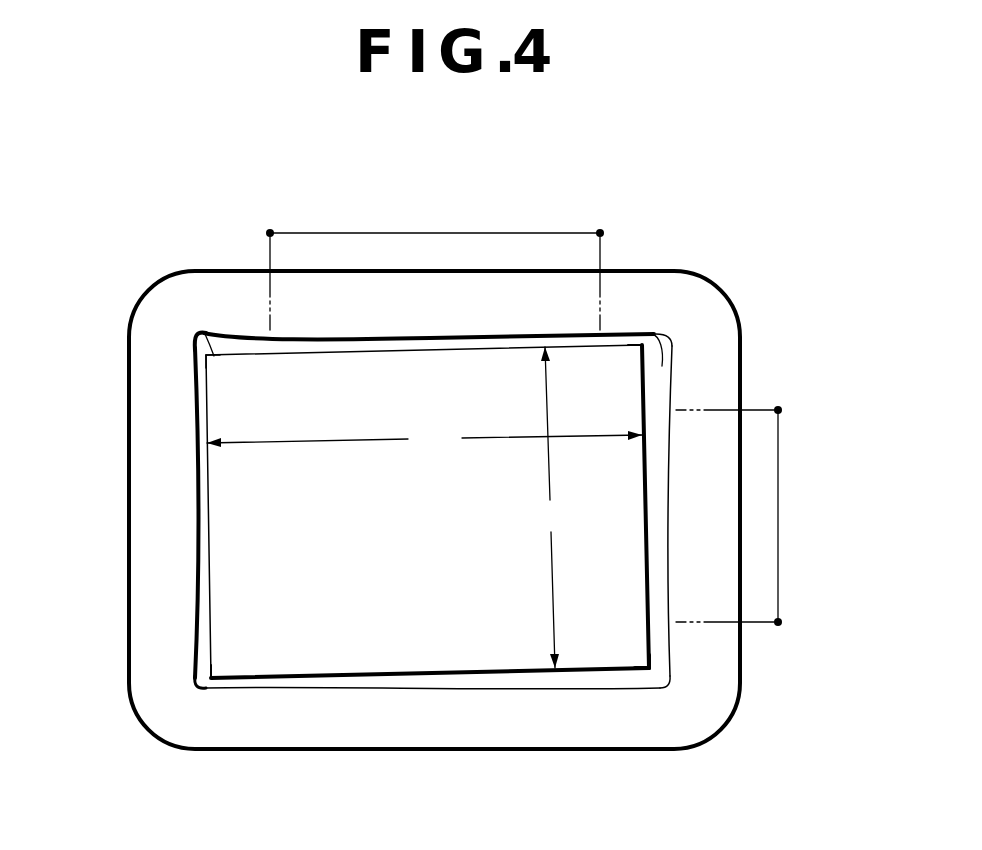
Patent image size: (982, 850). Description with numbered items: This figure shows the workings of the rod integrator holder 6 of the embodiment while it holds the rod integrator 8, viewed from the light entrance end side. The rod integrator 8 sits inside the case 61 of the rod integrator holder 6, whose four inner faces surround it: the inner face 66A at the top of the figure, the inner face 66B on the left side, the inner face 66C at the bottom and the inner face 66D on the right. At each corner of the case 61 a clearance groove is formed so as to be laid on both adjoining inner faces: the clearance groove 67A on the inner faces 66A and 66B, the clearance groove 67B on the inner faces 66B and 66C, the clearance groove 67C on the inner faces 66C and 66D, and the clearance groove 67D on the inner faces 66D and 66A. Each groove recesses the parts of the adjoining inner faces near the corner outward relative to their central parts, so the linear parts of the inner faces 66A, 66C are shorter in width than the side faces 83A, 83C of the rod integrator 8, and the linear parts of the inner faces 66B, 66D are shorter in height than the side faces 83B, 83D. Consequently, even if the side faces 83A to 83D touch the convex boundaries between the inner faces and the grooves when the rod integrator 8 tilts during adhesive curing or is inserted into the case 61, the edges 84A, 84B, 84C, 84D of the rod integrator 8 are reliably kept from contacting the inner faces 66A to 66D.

The rod integrator holder 6 is at (164, 240).
The case 61 is at (670, 262).
The rod integrator 8 is at (432, 568).
The inner face 66A is at (366, 348).
The inner face 66B is at (210, 553).
The inner face 66C is at (493, 687).
The inner face 66D is at (666, 534).
The clearance groove 67A is at (214, 356).
The clearance groove 67B is at (199, 677).
The clearance groove 67C is at (650, 683).
The clearance groove 67D is at (646, 348).
The side face 83A is at (415, 336).
The side face 83B is at (206, 502).
The side face 83C is at (458, 690).
The side face 83D is at (660, 393).
The edge 84A is at (196, 343).
The edge 84B is at (200, 690).
The edge 84C is at (672, 683).
The edge 84D is at (656, 337).